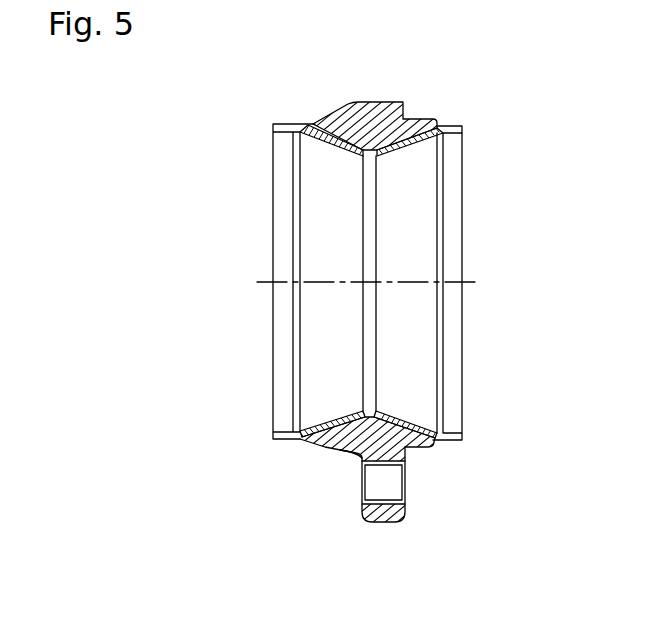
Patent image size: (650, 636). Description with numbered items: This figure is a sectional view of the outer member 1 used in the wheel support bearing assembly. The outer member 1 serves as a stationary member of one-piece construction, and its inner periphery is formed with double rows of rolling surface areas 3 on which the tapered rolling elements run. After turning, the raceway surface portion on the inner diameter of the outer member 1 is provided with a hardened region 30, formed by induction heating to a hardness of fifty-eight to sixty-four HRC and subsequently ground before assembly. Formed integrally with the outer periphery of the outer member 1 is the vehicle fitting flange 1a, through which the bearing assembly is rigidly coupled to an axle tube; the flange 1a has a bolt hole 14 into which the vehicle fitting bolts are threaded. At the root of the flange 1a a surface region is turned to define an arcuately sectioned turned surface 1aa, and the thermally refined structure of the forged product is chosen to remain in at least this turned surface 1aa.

The outer member 1 is at (482, 80).
The hardened region 30 is at (333, 135).
The rolling surface area 3 is at (333, 135).
The turned surface 1aa is at (358, 452).
The bolt hole 14 is at (382, 500).
The vehicle fitting flange 1a is at (383, 523).